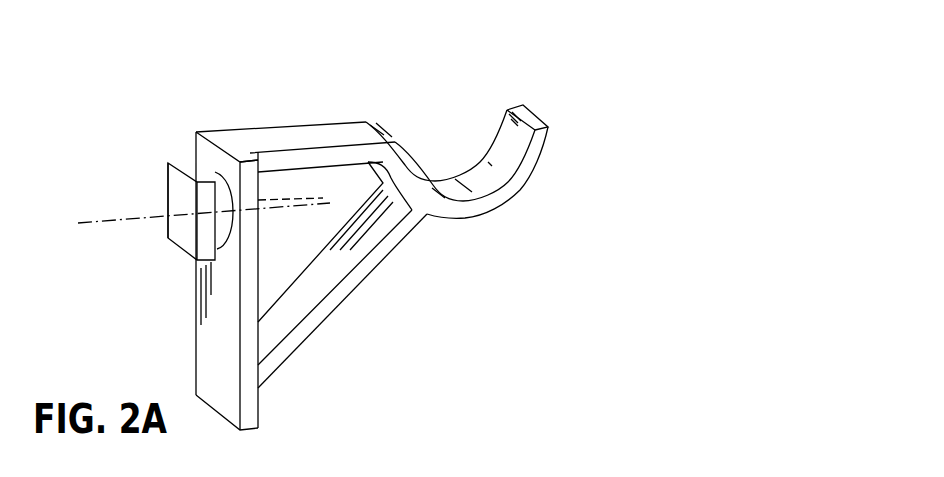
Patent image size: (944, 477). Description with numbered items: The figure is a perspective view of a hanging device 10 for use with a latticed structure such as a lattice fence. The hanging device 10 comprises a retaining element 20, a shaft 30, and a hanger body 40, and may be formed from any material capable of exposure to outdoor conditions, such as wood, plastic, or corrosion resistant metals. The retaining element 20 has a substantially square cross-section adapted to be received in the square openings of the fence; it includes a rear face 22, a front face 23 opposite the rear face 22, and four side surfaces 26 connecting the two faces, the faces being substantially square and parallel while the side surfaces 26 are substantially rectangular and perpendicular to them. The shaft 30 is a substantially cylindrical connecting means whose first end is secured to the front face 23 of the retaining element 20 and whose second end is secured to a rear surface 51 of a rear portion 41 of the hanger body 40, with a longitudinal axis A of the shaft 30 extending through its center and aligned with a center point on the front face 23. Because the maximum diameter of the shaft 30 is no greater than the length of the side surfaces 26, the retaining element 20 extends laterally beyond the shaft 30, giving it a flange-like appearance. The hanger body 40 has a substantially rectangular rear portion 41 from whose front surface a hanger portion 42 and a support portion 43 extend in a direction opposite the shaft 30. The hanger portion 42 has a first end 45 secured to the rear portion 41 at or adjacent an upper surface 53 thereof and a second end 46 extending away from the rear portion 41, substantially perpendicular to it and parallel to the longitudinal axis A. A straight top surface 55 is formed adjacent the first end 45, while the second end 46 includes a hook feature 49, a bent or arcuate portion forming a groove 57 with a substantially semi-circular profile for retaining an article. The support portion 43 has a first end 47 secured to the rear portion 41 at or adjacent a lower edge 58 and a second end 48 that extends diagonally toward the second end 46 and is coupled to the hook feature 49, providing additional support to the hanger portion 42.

The hanging device 10 is at (544, 81).
The retaining element 20 is at (166, 161).
The rear face 22 is at (178, 183).
The front face 23 is at (215, 218).
The side surfaces 26 is at (177, 163).
The shaft 30 is at (211, 165).
The hanger body 40 is at (291, 127).
The rear portion 41 is at (262, 354).
The hanger portion 42 is at (360, 127).
The support portion 43 is at (338, 298).
The first end 45 is at (243, 137).
The second end 46 is at (550, 137).
The first end 47 is at (262, 405).
The second end 48 is at (408, 222).
The hook feature 49 is at (466, 109).
The rear surface 51 is at (215, 338).
The upper surface 53 is at (218, 131).
The top surface 55 is at (318, 138).
The groove 57 is at (450, 187).
The lower edge 58 is at (248, 432).
The longitudinal axis A is at (194, 219).